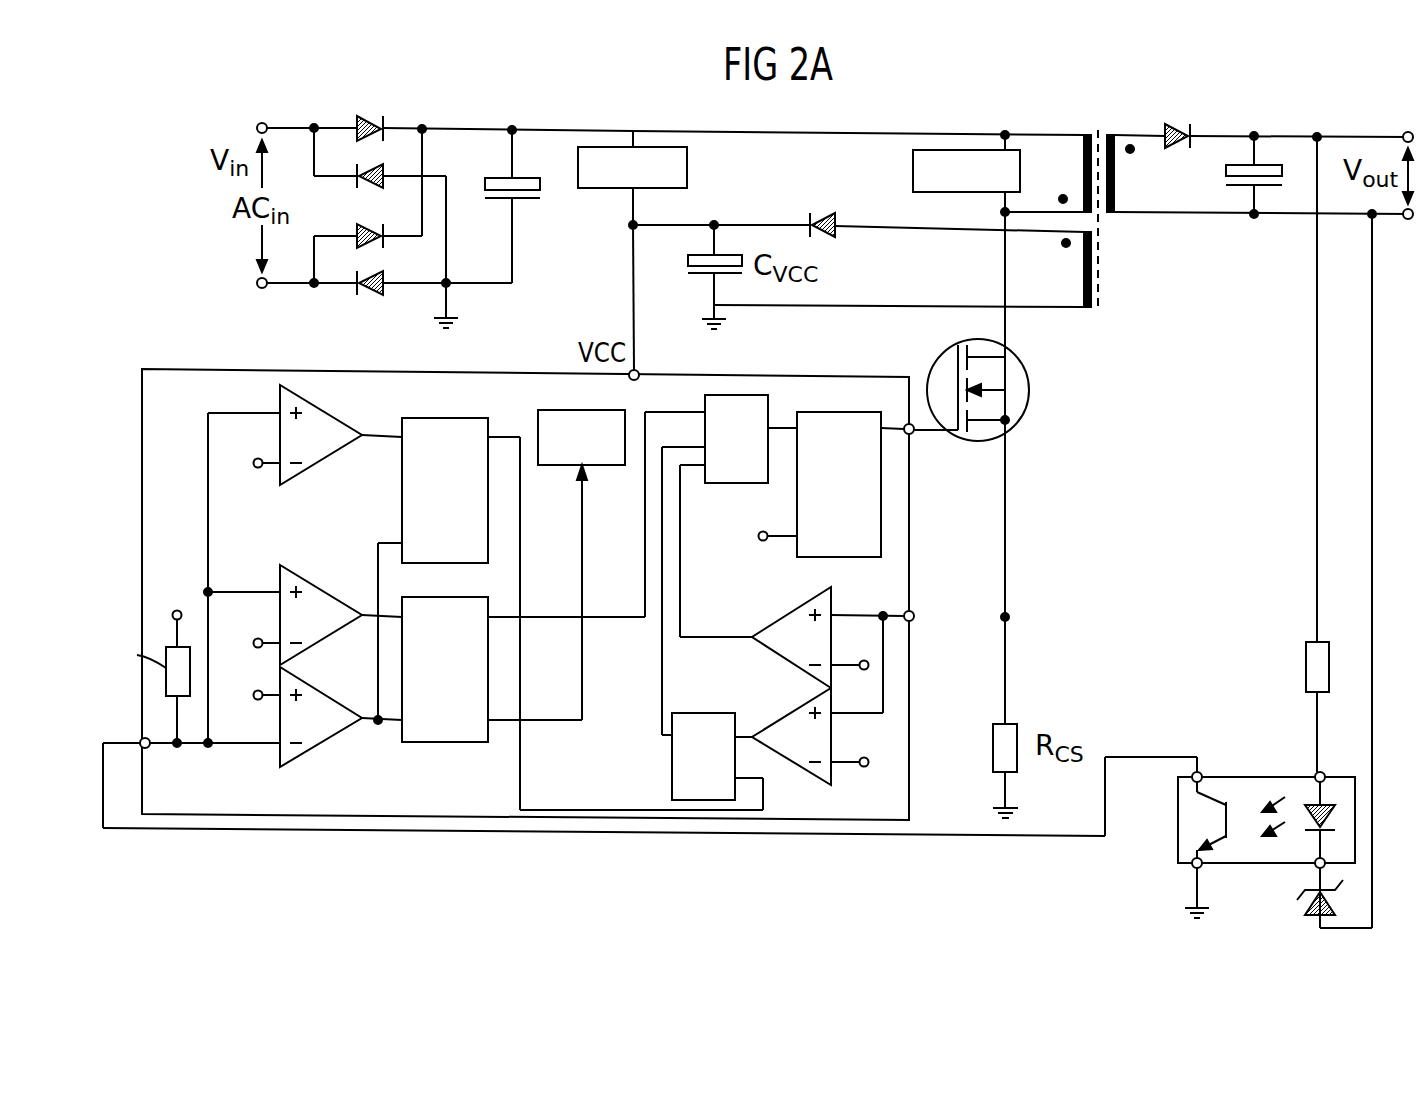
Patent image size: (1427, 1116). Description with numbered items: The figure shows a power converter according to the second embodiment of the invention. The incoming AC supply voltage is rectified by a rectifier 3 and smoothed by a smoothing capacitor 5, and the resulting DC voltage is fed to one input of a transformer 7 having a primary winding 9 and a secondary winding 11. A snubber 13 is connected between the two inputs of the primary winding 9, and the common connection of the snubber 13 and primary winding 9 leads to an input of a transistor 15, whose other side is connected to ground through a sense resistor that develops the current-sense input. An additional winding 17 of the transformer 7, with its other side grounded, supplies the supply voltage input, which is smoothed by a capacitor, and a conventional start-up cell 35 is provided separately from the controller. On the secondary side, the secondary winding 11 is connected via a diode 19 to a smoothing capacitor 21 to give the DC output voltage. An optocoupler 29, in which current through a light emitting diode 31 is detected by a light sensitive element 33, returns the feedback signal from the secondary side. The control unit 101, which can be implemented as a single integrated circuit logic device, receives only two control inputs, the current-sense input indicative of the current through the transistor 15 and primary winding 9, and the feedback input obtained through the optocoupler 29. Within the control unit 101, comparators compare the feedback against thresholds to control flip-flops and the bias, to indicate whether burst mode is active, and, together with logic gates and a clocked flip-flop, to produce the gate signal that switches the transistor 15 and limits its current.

The rectifier 3 is at (348, 311).
The smoothing capacitor 5 is at (528, 213).
The transformer 7 is at (1206, 193).
The primary winding 9 is at (1083, 150).
The secondary winding 11 is at (1114, 192).
The snubber 13 is at (913, 168).
The transistor 15 is at (1022, 424).
The additional winding 17 is at (1083, 278).
The diode 19 is at (1181, 142).
The smoothing capacitor 21 is at (1268, 187).
The optocoupler 29 is at (1241, 817).
The light emitting diode 31 is at (1312, 805).
The light sensitive element 33 is at (1226, 820).
The start-up cell 35 is at (687, 172).
The control unit 101 is at (187, 369).